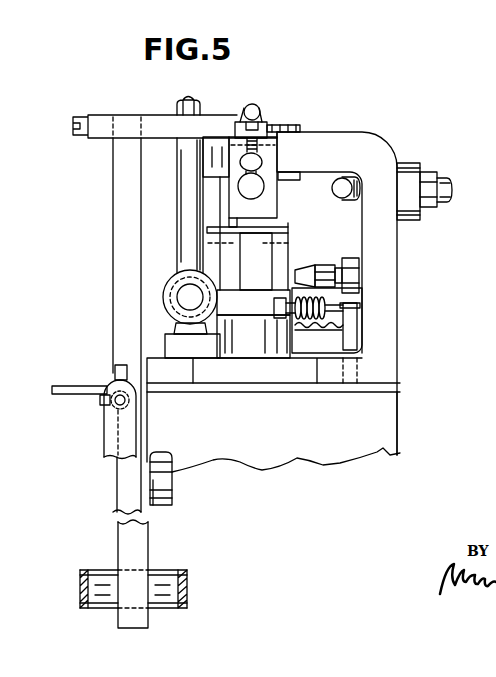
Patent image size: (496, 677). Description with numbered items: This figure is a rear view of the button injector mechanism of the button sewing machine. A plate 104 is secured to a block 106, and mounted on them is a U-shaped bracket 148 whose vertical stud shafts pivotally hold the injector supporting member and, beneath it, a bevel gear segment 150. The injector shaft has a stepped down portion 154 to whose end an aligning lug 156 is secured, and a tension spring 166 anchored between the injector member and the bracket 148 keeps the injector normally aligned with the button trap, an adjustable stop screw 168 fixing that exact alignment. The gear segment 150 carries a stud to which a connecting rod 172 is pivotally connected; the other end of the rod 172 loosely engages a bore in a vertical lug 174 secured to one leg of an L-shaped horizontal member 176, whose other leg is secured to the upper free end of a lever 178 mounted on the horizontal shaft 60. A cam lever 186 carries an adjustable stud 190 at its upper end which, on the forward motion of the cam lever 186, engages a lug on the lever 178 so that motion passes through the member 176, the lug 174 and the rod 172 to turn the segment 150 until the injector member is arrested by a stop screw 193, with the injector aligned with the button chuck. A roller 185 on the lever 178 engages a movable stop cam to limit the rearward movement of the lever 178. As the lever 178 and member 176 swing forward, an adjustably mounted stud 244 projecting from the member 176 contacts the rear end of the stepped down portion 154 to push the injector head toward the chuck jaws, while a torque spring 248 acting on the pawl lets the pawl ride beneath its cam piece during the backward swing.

The horizontal shaft 60 is at (166, 580).
The plate 104 is at (75, 387).
The block 106 is at (394, 418).
The U-shaped bracket 148 is at (387, 254).
The bevel gear segment 150 is at (334, 347).
The stepped down portion 154 is at (264, 192).
The aligning lug 156 is at (262, 232).
The tension spring 166 is at (357, 312).
The adjustable stop screw 168 is at (451, 184).
The connecting rod 172 is at (186, 296).
The vertical lug 174 is at (179, 228).
The L-shaped horizontal member 176 is at (151, 120).
The lever 178 is at (117, 240).
The roller 185 is at (166, 482).
The cam lever 186 is at (112, 447).
The adjustable stud 190 is at (112, 414).
The stop screw 193 is at (313, 266).
The adjustably mounted stud 244 is at (263, 163).
The torque spring 248 is at (241, 251).